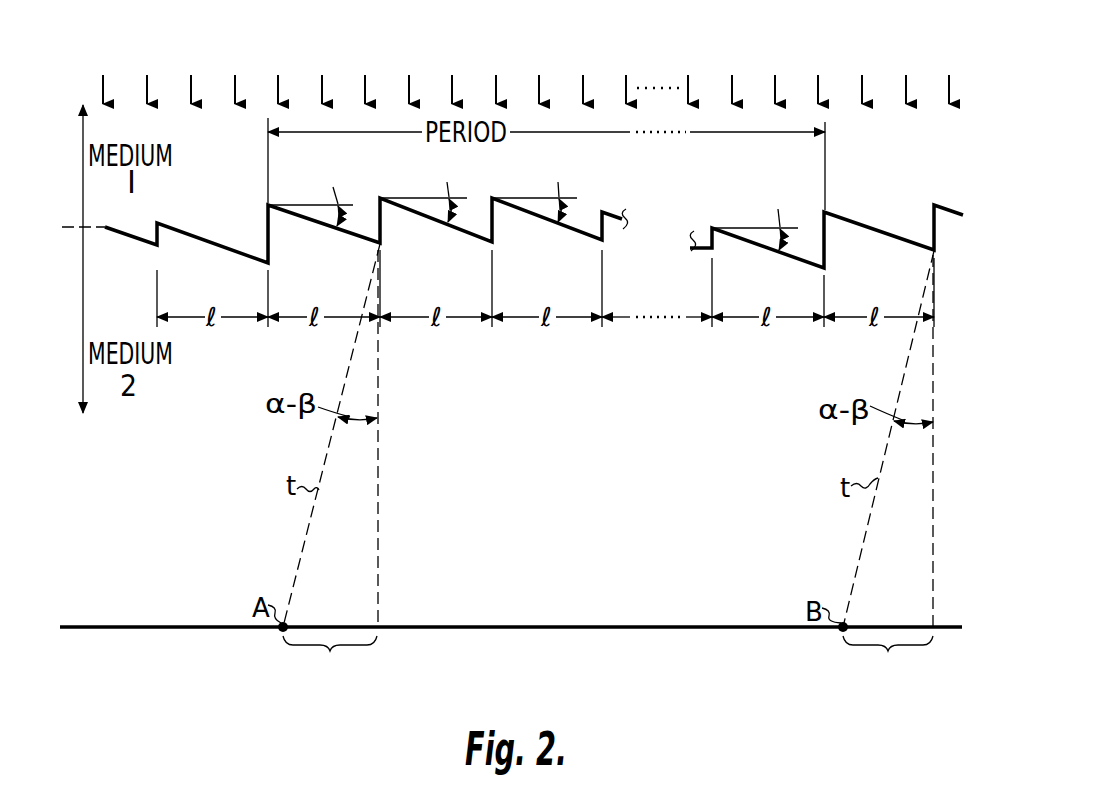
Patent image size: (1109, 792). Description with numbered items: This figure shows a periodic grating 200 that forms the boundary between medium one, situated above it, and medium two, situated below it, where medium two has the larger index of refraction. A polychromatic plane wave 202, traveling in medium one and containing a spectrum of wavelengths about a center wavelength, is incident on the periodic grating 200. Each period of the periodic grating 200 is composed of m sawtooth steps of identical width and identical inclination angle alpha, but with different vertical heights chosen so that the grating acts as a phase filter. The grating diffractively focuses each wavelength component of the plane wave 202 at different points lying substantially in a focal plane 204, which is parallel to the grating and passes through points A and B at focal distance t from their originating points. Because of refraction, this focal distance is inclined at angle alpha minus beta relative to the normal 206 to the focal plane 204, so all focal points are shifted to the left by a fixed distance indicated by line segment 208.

The periodic grating 200 is at (175, 229).
The polychromatic plane wave 202 is at (526, 54).
The focal plane 204 is at (473, 632).
The normal to grating at groove 206 is at (380, 601).
The line segment 208 is at (330, 651).